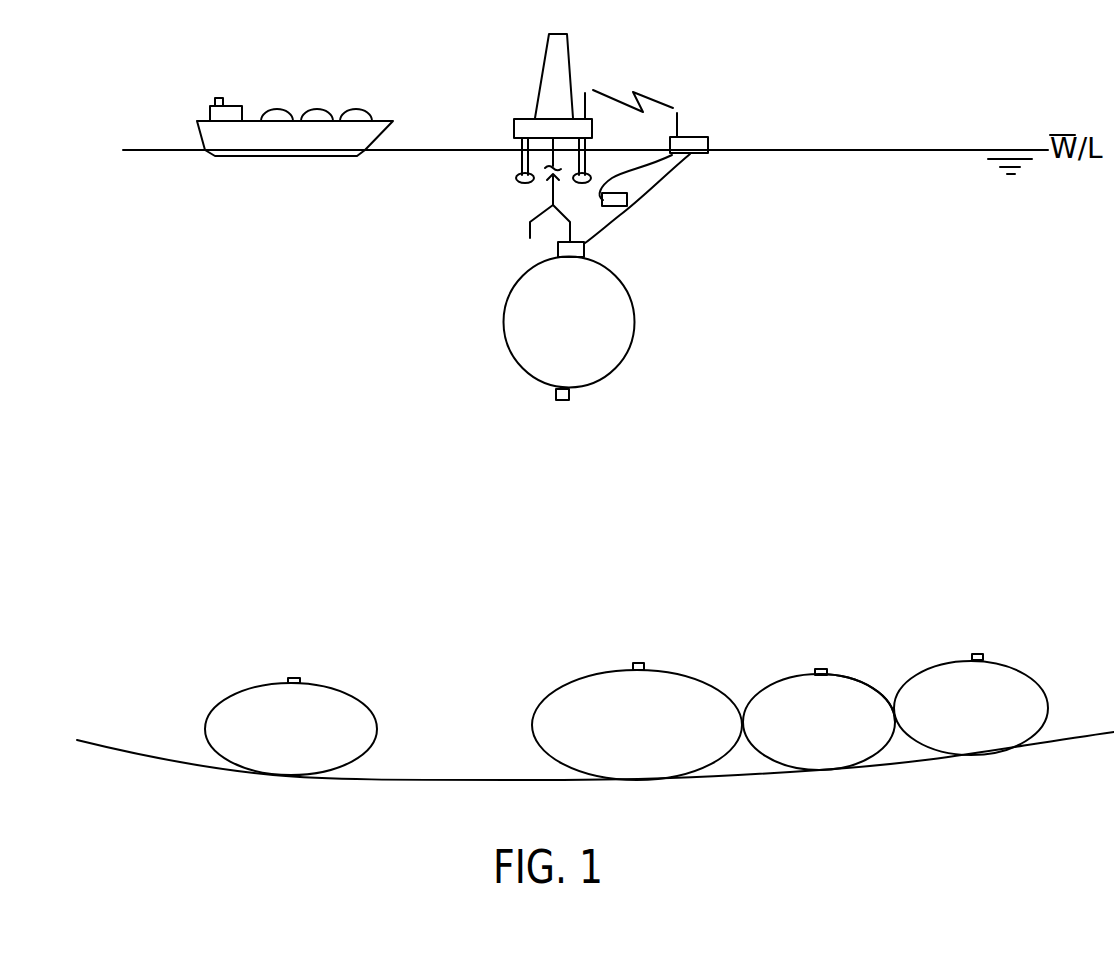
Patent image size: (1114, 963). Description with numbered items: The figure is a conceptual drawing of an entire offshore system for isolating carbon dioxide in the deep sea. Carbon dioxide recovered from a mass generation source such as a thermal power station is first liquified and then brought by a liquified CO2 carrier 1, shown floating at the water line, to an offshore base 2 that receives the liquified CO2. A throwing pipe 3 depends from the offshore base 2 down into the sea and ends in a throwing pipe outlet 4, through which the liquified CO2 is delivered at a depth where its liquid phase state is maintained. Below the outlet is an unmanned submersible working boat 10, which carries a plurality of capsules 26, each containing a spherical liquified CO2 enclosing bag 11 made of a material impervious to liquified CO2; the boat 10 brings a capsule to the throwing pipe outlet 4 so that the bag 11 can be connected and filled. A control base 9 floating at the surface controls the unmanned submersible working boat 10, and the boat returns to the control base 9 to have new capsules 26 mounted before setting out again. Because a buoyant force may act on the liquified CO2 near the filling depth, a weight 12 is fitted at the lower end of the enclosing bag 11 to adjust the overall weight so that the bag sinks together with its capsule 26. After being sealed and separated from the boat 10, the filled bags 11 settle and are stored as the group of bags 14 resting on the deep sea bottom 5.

The liquified CO2 carrier 1 is at (284, 105).
The offshore base 2 is at (576, 80).
The throwing pipe 3 is at (548, 191).
The throwing pipe outlet 4 is at (532, 243).
The deep sea bottom 5 is at (565, 827).
The control base 9 is at (709, 133).
The unmanned submersible working boat 10 is at (586, 248).
The liquified CO2 enclosing bag 11 is at (636, 317).
The weight 12 is at (571, 395).
The storage tanks 14 is at (868, 702).
The capsule 26 is at (813, 672).